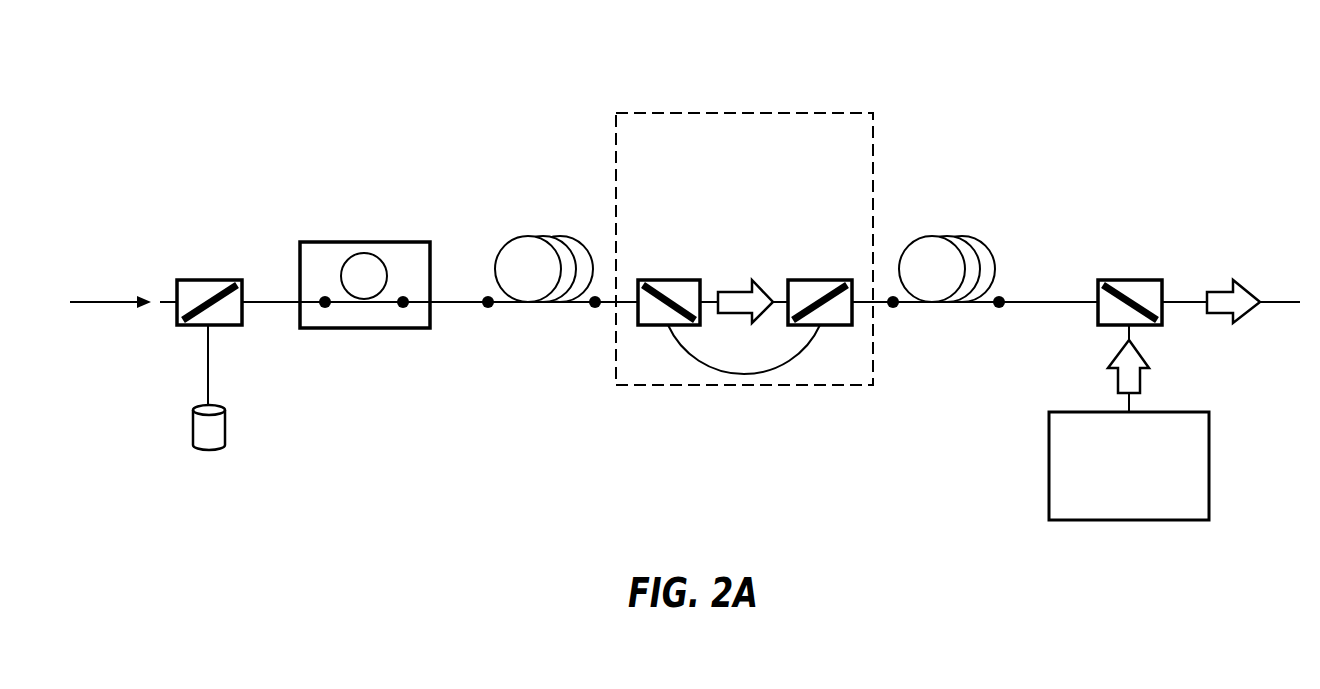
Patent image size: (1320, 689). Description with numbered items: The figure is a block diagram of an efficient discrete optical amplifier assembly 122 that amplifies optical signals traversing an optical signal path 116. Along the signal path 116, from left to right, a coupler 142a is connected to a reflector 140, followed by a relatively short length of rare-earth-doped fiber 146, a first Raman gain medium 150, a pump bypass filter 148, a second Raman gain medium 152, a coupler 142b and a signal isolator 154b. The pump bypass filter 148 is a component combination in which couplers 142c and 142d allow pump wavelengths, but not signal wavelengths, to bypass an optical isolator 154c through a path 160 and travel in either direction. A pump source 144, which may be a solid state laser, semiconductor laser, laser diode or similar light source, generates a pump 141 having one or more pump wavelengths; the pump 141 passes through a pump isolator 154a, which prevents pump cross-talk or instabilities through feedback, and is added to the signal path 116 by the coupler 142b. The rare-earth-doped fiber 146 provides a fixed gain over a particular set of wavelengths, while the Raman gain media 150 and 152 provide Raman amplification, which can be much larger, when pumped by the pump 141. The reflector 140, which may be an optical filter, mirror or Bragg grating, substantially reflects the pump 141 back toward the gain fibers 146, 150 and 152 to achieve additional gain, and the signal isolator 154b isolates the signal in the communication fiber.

The optical signal path 116 is at (110, 292).
The efficient discrete optical amplifier assembly 122 is at (1146, 112).
The reflector 140 is at (193, 427).
The pump 141 is at (1127, 405).
The coupler 142a is at (208, 280).
The coupler 142b is at (1130, 280).
The coupler 142c is at (668, 280).
The coupler 142d is at (822, 280).
The pump source 144 is at (1147, 476).
The rare-earth-doped fiber 146 is at (365, 242).
The pump bypass filter 148 is at (757, 113).
The first Raman gain medium 150 is at (528, 237).
The second Raman gain medium 152 is at (932, 237).
The pump isolator 154a is at (1141, 380).
The signal isolator 154b is at (1218, 288).
The optical isolator 154c is at (735, 290).
The path 160 is at (785, 365).